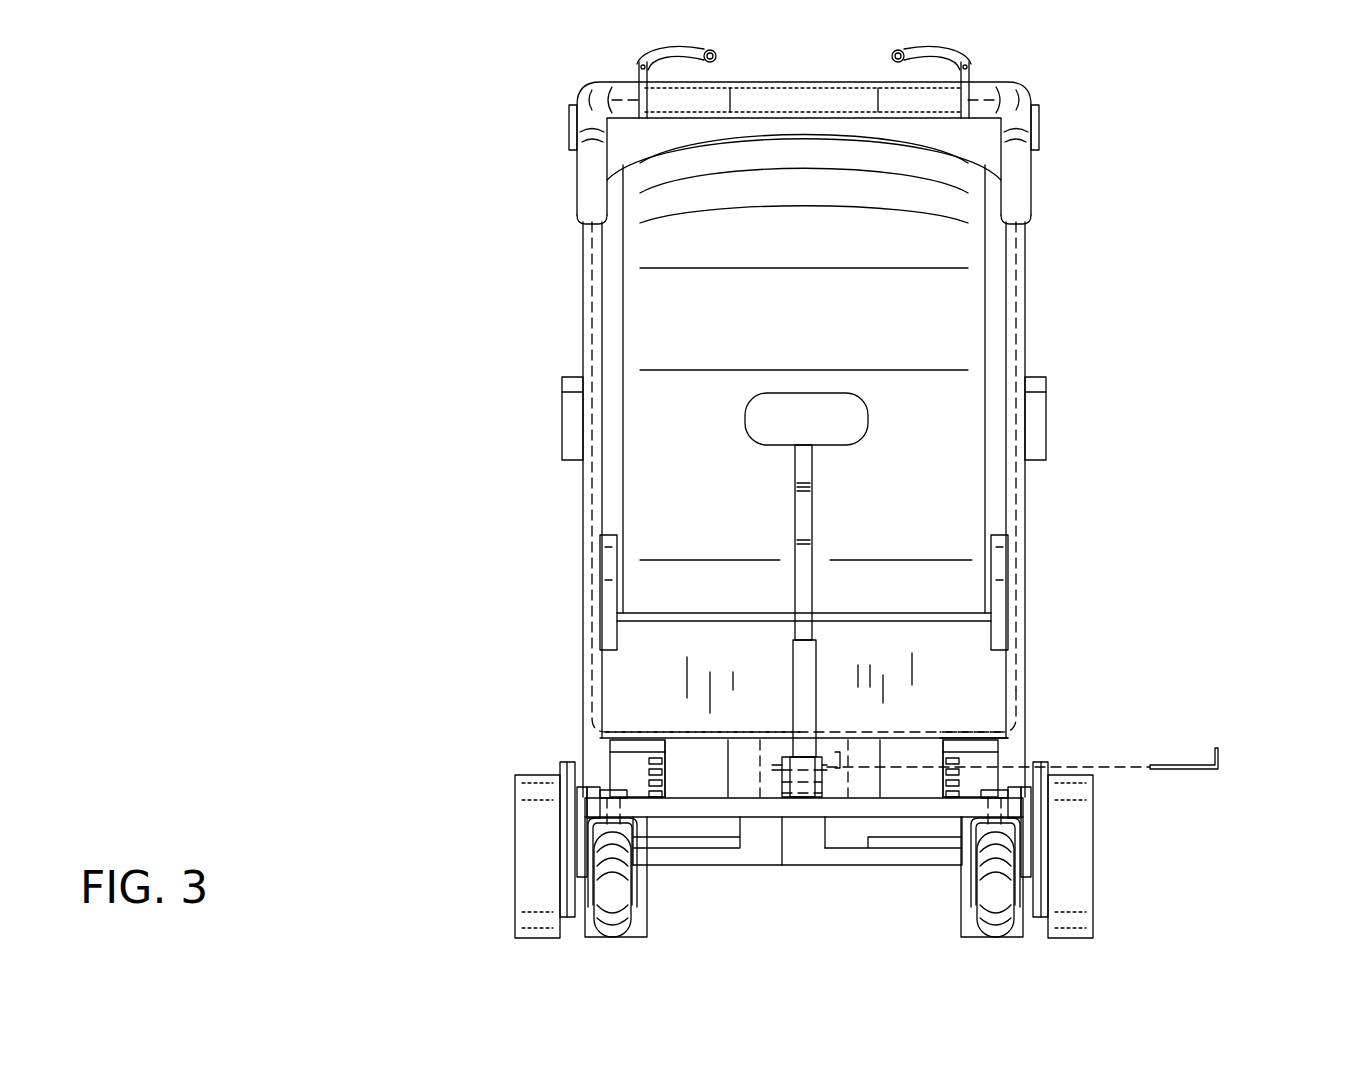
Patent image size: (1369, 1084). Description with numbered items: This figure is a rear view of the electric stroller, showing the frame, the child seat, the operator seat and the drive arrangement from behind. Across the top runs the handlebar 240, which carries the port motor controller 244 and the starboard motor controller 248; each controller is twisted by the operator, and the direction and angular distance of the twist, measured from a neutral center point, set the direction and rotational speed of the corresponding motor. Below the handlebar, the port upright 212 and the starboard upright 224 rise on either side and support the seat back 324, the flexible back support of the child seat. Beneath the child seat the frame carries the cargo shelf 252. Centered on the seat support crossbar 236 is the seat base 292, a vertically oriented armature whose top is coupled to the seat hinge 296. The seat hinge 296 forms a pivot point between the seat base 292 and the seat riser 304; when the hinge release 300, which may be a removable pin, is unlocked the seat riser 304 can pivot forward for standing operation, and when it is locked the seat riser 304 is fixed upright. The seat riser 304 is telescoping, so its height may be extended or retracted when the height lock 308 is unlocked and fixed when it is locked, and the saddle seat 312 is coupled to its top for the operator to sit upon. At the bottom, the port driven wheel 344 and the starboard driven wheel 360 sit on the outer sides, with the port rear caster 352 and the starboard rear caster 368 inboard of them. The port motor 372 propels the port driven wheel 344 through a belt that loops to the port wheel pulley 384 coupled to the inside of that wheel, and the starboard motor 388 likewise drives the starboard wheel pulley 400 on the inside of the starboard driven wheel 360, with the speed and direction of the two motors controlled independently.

The port upright 212 is at (587, 495).
The starboard upright 224 is at (1022, 500).
The seat support crossbar 236 is at (863, 860).
The handlebar 240 is at (820, 108).
The port motor controller 244 is at (653, 62).
The starboard motor controller 248 is at (955, 62).
The cargo shelf 252 is at (957, 732).
The seat base 292 is at (793, 828).
The seat hinge 296 is at (807, 757).
The hinge release 300 is at (1222, 758).
The seat riser 304 is at (808, 570).
The height lock 308 is at (792, 718).
The saddle seat 312 is at (763, 422).
The seat back 324 is at (708, 250).
The port driven wheel 344 is at (537, 830).
The port rear caster 352 is at (613, 923).
The starboard driven wheel 360 is at (1087, 867).
The starboard rear caster 368 is at (1000, 928).
The port motor 372 is at (637, 783).
The port wheel pulley 384 is at (567, 770).
The starboard motor 388 is at (970, 782).
The starboard wheel pulley 400 is at (1048, 768).